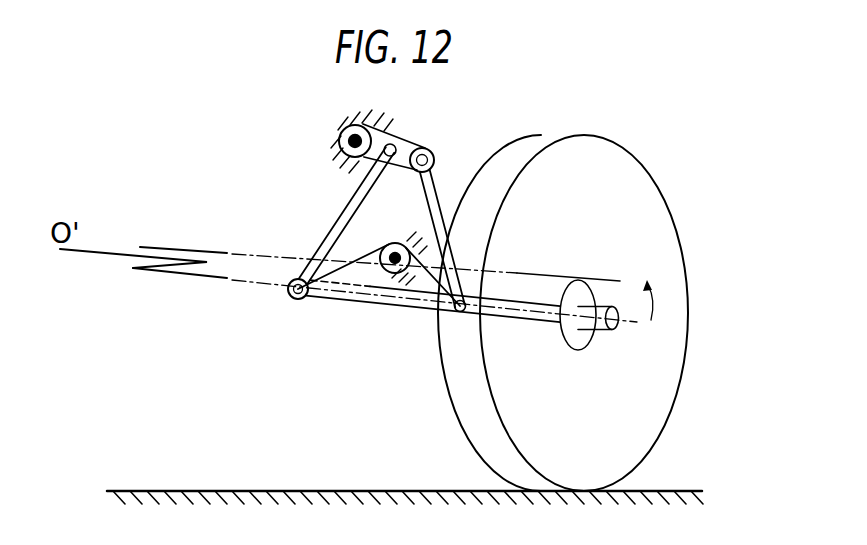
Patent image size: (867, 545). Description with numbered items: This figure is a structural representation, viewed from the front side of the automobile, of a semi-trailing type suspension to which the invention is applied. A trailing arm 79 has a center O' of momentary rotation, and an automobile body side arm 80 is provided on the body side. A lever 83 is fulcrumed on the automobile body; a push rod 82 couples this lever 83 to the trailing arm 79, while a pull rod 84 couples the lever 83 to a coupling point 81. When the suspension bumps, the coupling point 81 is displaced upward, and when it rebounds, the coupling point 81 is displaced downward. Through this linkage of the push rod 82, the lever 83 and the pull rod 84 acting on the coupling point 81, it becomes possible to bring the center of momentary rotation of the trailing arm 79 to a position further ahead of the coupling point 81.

The trailing arm 79 is at (404, 307).
The automobile body side arm 80 is at (370, 250).
The coupling point 81 is at (296, 301).
The push rod 82 is at (437, 198).
The lever 83 is at (407, 146).
The pull rod 84 is at (360, 197).